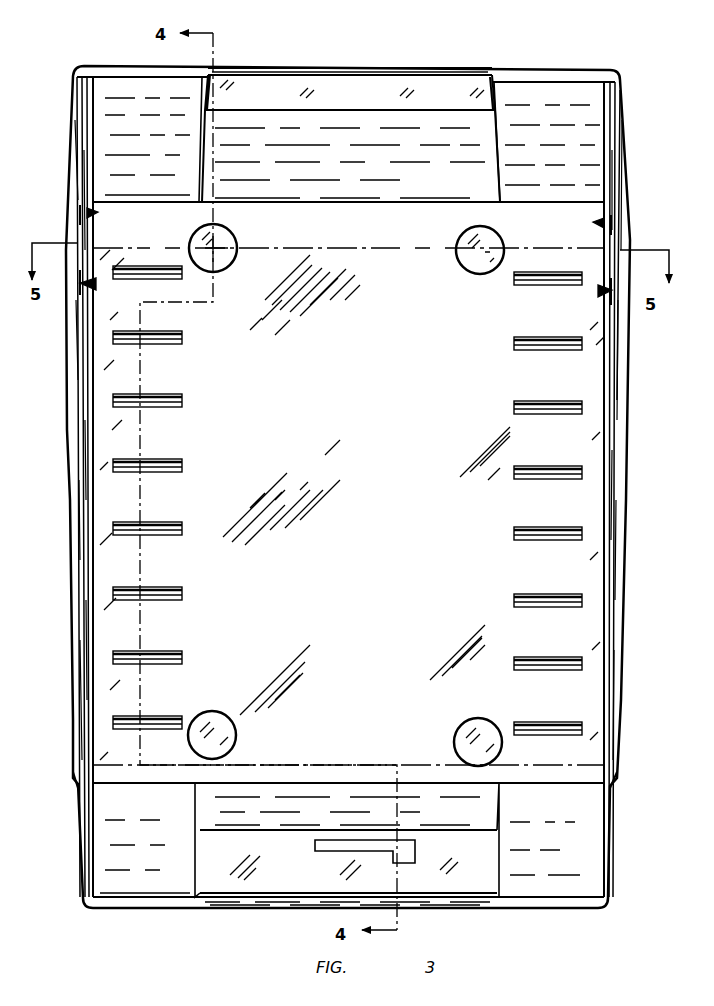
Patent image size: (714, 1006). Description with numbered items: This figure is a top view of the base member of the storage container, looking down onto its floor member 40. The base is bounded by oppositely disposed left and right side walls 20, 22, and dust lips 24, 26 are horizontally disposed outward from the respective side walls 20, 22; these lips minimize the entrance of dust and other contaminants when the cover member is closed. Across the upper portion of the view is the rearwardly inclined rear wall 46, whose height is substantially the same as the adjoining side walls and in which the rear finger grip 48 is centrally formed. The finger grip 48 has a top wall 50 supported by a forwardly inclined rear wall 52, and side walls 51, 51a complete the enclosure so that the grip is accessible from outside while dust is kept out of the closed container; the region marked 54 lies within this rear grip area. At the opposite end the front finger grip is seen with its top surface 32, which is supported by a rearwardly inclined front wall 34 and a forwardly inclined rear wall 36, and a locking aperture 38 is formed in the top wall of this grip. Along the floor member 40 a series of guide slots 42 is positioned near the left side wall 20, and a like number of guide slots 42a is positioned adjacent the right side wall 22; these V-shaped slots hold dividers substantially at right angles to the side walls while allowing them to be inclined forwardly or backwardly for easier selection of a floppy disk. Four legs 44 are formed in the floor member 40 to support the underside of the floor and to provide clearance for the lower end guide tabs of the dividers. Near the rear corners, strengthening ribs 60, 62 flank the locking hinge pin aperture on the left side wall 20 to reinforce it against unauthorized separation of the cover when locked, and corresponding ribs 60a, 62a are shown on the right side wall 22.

The left side wall 20 is at (88, 875).
The right side wall 22 is at (612, 876).
The dust lip 24 is at (74, 780).
The dust lip 26 is at (616, 782).
The top surface 32 is at (286, 879).
The rearwardly inclined front wall 34 is at (246, 902).
The forwardly inclined rear wall 36 is at (458, 818).
The locking aperture 38 is at (412, 863).
The floor member 40 is at (378, 671).
The guide slots 42 is at (182, 272).
The guide slots 42a is at (514, 280).
The legs 44 is at (237, 247).
The rearwardly inclined rear wall 46 is at (276, 68).
The rear finger grip 48 is at (437, 54).
The top wall 50 is at (358, 101).
The side wall 51 is at (202, 135).
The side wall 51a is at (502, 145).
The forwardly inclined rear wall 52 is at (381, 68).
The upper recess 54 is at (459, 189).
The strengthening rib 60 is at (96, 285).
The right lower detent 60a is at (600, 291).
The strengthening rib 62 is at (98, 213).
The right upper detent 62a is at (602, 222).